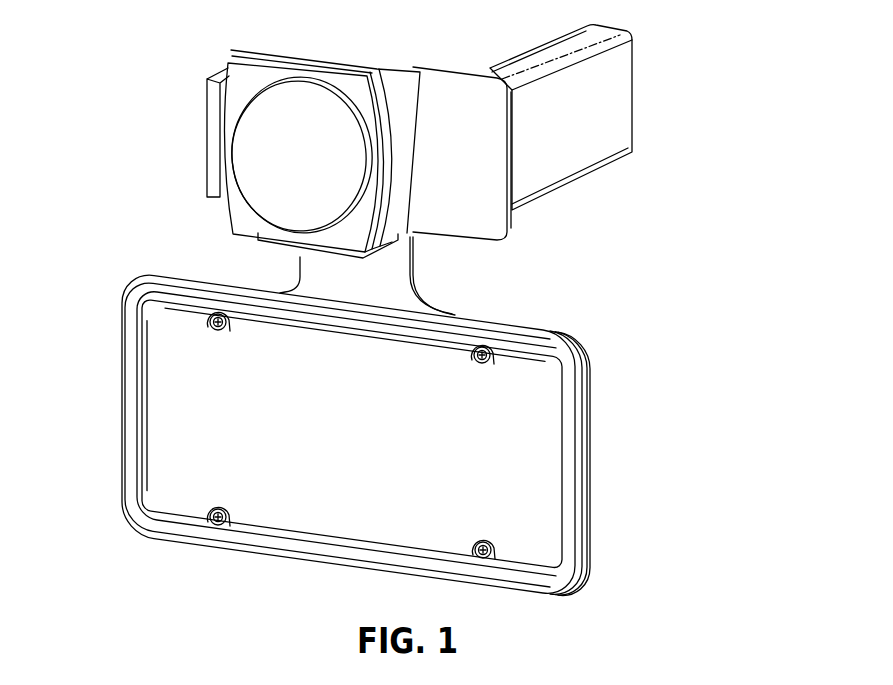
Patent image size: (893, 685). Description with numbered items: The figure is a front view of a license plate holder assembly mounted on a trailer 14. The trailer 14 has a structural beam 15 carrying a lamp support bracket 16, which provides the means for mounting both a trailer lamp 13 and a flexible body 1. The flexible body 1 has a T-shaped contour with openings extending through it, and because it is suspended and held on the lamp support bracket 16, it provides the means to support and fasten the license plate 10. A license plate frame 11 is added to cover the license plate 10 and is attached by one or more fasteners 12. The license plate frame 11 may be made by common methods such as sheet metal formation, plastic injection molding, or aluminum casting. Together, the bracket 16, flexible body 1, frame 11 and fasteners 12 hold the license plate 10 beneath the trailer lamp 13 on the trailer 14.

The flexible body 1 is at (413, 257).
The license plate 10 is at (180, 405).
The license plate frame 11 is at (573, 490).
The fasteners 12 is at (495, 362).
The trailer lamp 13 is at (258, 138).
The trailer 14 is at (638, 85).
The structural beam 15 is at (588, 142).
The lamp support bracket 16 is at (483, 215).